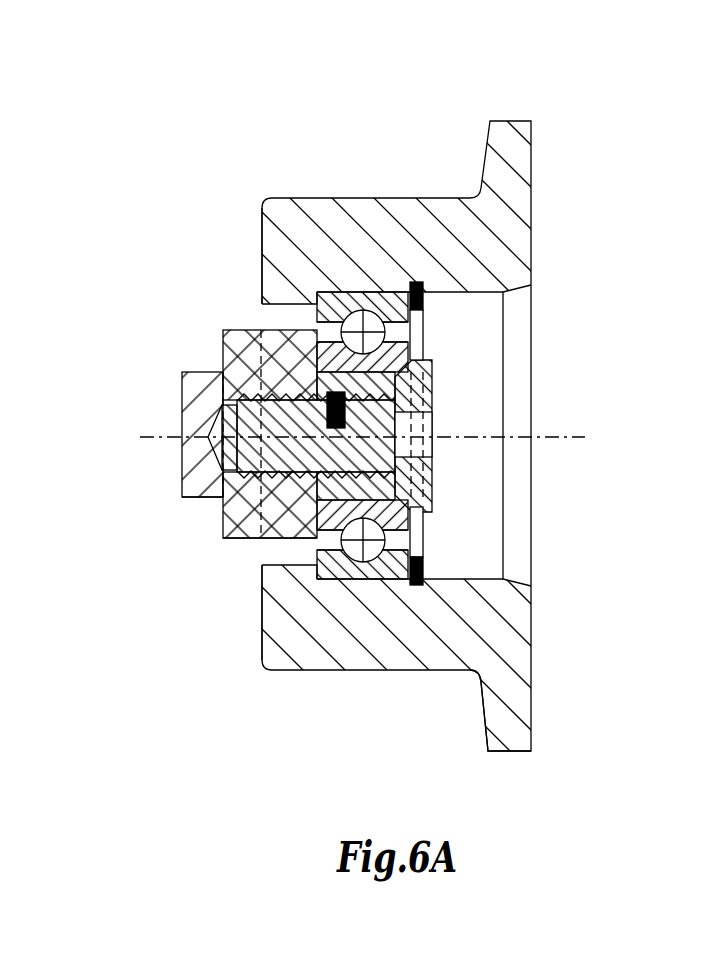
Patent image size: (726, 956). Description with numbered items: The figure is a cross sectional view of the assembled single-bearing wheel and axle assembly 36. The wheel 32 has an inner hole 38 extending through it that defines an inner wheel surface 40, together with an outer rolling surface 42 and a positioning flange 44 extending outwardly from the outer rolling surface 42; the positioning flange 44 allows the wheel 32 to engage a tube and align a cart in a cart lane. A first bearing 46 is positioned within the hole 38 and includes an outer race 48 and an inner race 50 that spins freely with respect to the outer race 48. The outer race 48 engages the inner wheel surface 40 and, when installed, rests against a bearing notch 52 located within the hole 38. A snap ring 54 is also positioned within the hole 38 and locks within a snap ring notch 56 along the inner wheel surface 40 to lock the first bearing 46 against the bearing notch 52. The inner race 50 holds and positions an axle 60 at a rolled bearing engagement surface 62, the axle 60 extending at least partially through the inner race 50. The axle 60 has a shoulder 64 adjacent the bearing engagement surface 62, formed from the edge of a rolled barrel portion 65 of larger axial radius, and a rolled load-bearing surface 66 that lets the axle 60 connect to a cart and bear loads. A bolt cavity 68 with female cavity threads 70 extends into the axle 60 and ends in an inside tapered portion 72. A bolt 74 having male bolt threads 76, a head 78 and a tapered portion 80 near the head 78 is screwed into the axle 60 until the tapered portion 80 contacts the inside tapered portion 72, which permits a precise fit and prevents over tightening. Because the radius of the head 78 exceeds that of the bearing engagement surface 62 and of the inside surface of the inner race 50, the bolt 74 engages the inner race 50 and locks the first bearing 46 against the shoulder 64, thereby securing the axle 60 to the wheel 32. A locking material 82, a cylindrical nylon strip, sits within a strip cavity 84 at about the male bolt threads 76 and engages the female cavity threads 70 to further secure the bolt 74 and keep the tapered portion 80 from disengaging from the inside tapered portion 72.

The wheel 32 is at (290, 218).
The single-bearing wheel and axle assembly 36 is at (392, 90).
The inner hole 38 is at (282, 320).
The inner wheel surface 40 is at (362, 567).
The outer rolling surface 42 is at (308, 669).
The positioning flange 44 is at (500, 752).
The first bearing 46 is at (337, 580).
The outer race 48 is at (355, 298).
The inner race 50 is at (264, 238).
The bearing notch 52 is at (313, 570).
The snap ring 54 is at (424, 566).
The snap ring notch 56 is at (420, 586).
The axle 60 is at (192, 372).
The bearing engagement surface 62 is at (426, 332).
The shoulder 64 is at (253, 517).
The rolled barrel portion 65 is at (248, 532).
The rolled load-bearing surface 66 is at (200, 497).
The bolt cavity 68 is at (220, 415).
The female cavity threads 70 is at (262, 330).
The inside tapered portion 72 is at (433, 485).
The bolt 74 is at (251, 407).
The male bolt threads 76 is at (243, 362).
The head 78 is at (433, 397).
The tapered portion 80 is at (433, 462).
The locking material 82 is at (262, 482).
The strip cavity 84 is at (433, 404).